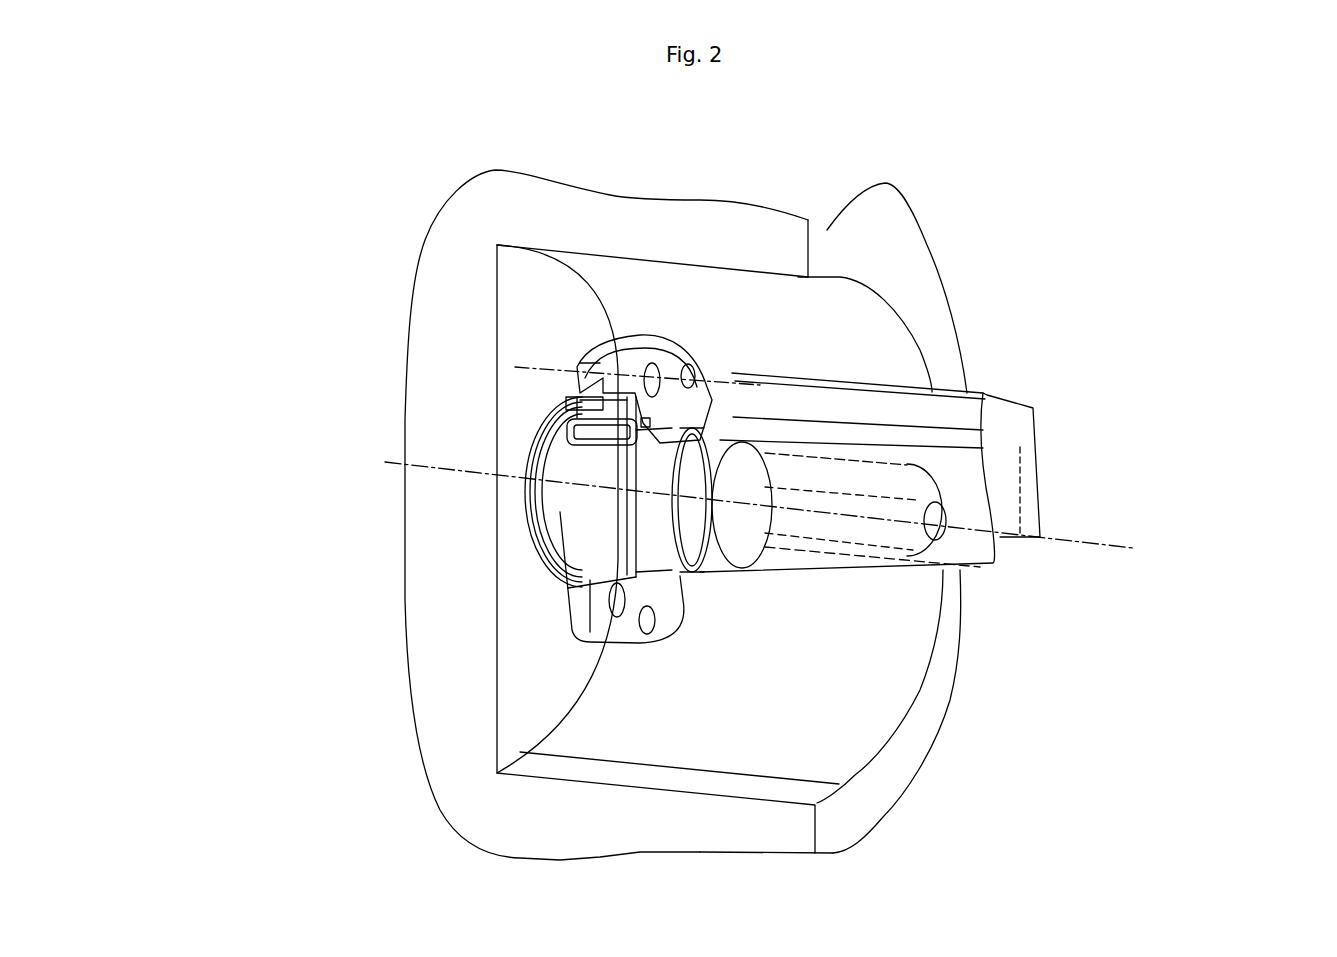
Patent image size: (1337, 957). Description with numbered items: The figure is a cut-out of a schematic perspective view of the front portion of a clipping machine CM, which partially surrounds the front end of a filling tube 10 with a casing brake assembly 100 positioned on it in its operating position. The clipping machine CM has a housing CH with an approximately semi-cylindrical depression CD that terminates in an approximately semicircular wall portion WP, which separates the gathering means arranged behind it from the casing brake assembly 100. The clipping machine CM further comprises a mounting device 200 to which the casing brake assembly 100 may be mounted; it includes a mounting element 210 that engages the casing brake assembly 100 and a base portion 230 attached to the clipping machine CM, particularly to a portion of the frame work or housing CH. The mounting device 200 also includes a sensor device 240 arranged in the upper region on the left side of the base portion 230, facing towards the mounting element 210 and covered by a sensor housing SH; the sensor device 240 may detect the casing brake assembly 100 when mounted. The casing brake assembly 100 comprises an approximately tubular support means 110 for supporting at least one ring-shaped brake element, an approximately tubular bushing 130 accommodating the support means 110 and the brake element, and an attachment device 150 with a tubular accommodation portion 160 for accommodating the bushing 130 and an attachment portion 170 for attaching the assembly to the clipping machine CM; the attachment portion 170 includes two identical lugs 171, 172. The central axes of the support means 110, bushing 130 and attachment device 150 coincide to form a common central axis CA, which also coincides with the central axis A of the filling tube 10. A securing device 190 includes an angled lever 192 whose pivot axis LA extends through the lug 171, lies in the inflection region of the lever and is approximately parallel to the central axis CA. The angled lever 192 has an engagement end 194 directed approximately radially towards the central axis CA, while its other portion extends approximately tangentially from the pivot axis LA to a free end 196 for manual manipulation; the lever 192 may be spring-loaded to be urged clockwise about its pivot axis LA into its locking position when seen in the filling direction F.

The filling tube 10 is at (902, 527).
The casing brake assembly 100 is at (215, 373).
The tubular support means 110 is at (740, 548).
The tubular bushing 130 is at (653, 505).
The attachment device 150 is at (250, 518).
The tubular accommodation portion 160 is at (590, 473).
The attachment portion 170 is at (298, 447).
The lug 171 is at (597, 408).
The lug 172 is at (590, 538).
The securing device 190 is at (827, 145).
The angled lever 192 is at (667, 362).
The engagement end 194 is at (657, 420).
The free end 196 is at (685, 358).
The mounting device 200 is at (1292, 452).
The mounting element 210 is at (660, 345).
The base portion 230 is at (1007, 507).
The sensor device 240 is at (720, 399).
The semicircular wall portion WP is at (537, 290).
The pivot axis LA is at (557, 372).
The housing CH is at (912, 268).
The semi-cylindrical depression CD is at (880, 333).
The clipping machine CM is at (1083, 214).
The sensor housing SH is at (957, 420).
The central axis CA is at (955, 528).
The central axis A is at (973, 530).
The filling direction F is at (877, 528).